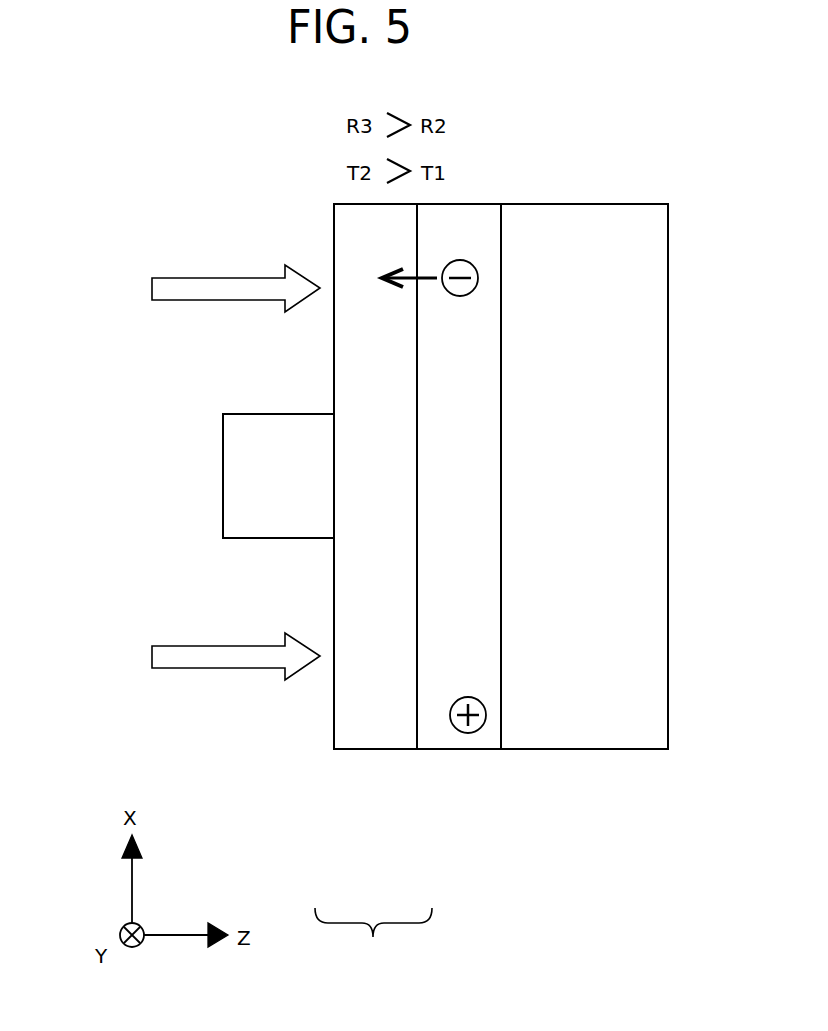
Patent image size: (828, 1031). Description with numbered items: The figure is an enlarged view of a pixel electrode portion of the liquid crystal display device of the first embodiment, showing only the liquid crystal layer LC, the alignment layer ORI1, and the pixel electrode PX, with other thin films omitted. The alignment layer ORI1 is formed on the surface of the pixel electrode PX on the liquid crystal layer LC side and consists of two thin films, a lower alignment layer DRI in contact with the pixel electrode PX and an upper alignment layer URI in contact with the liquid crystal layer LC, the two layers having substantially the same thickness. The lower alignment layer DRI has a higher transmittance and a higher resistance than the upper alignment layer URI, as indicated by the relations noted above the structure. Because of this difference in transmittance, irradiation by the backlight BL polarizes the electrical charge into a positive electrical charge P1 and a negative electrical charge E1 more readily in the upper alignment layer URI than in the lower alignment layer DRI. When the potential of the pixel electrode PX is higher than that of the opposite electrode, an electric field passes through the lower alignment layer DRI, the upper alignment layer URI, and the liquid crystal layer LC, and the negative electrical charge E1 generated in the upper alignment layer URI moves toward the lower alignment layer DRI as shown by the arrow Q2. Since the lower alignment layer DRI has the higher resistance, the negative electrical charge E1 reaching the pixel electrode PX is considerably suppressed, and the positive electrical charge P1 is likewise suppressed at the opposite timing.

The backlight BL is at (162, 276).
The pixel electrode PX is at (232, 468).
The lower alignment layer DRI is at (370, 735).
The upper alignment layer URI is at (438, 735).
The alignment layer ORI1 is at (373, 938).
The liquid crystal layer LC is at (592, 730).
The negative electrical charge E1 is at (472, 257).
The positive electrical charge P1 is at (480, 733).
The arrow Q2 is at (403, 263).